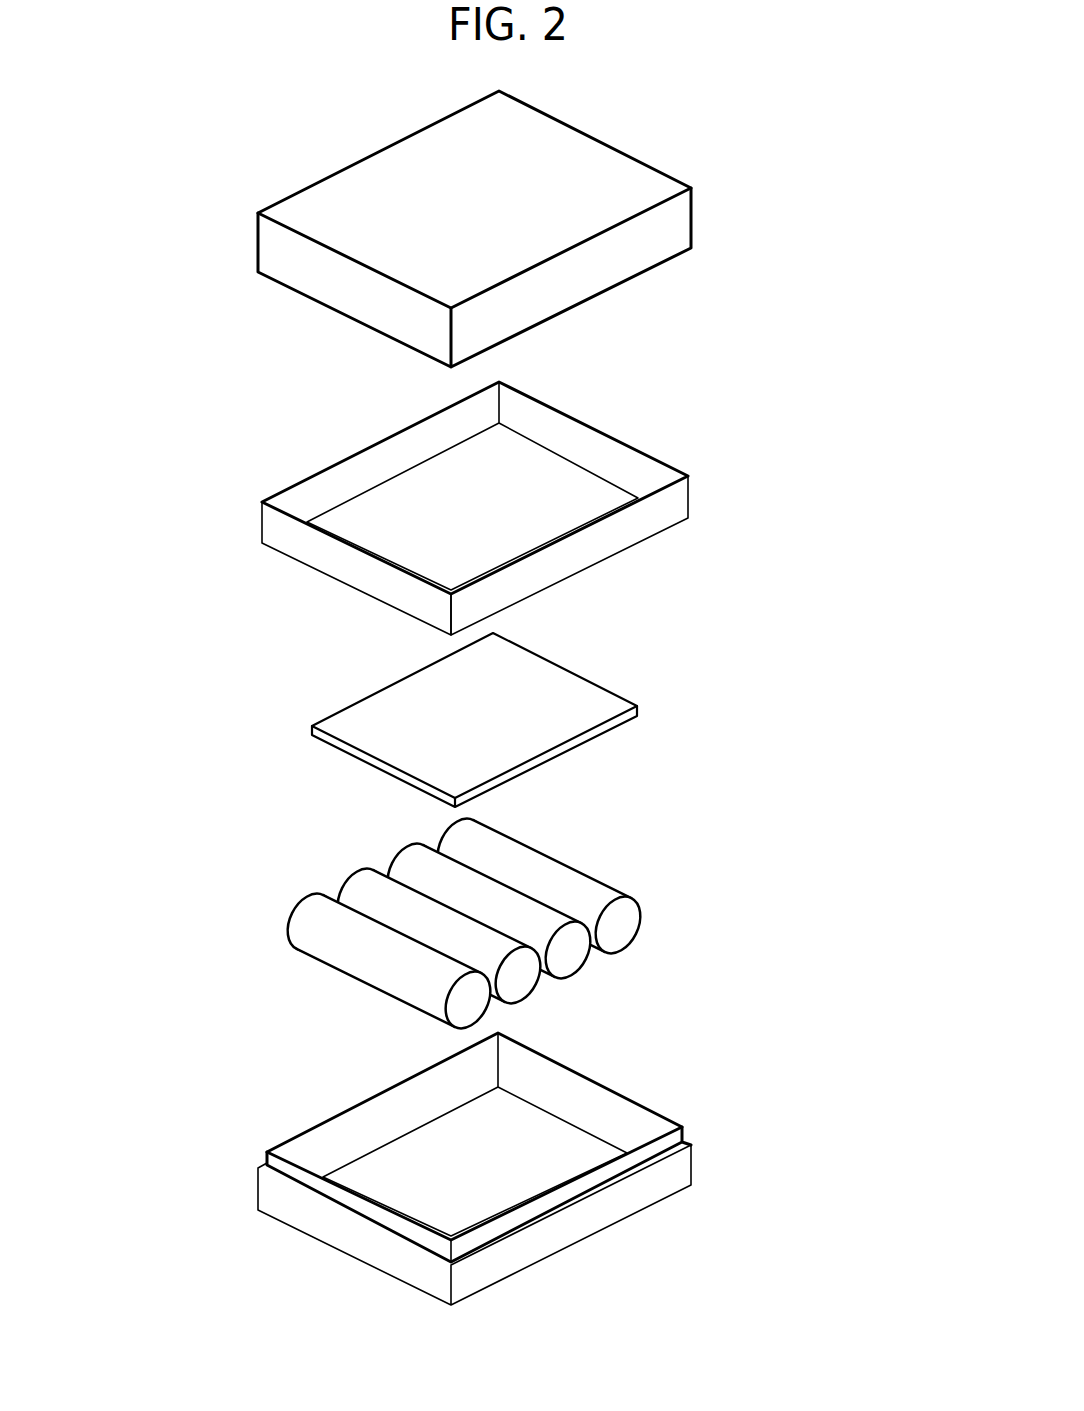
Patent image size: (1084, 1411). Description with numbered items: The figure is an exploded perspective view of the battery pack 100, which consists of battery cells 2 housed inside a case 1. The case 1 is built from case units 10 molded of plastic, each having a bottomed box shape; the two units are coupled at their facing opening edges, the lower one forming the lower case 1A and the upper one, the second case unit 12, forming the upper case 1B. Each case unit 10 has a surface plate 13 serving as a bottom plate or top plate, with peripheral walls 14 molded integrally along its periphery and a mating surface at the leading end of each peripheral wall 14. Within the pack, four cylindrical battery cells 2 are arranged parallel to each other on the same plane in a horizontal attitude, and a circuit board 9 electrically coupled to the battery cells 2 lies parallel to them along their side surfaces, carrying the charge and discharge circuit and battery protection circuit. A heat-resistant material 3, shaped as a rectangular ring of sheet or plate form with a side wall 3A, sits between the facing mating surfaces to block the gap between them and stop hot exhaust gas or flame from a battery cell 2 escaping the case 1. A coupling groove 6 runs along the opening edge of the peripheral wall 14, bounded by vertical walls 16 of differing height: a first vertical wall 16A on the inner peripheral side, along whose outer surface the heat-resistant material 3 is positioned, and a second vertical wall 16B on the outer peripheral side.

The battery pack 100 is at (255, 137).
The case 1 is at (148, 420).
The lower case 1A is at (260, 1052).
The upper case 1B is at (245, 343).
The battery cell 2 is at (550, 880).
The heat-resistant material 3 is at (503, 495).
The side wall of tray 3A is at (603, 540).
The coupling groove 6 is at (549, 1196).
The circuit board 9 is at (425, 695).
The case unit 10 is at (579, 1191).
The second case unit 12 is at (579, 659).
The surface plate 13 is at (568, 158).
The peripheral wall 14 is at (516, 707).
The vertical wall 16 is at (474, 1208).
The first vertical wall 16A is at (527, 1212).
The second vertical wall 16B is at (593, 1217).